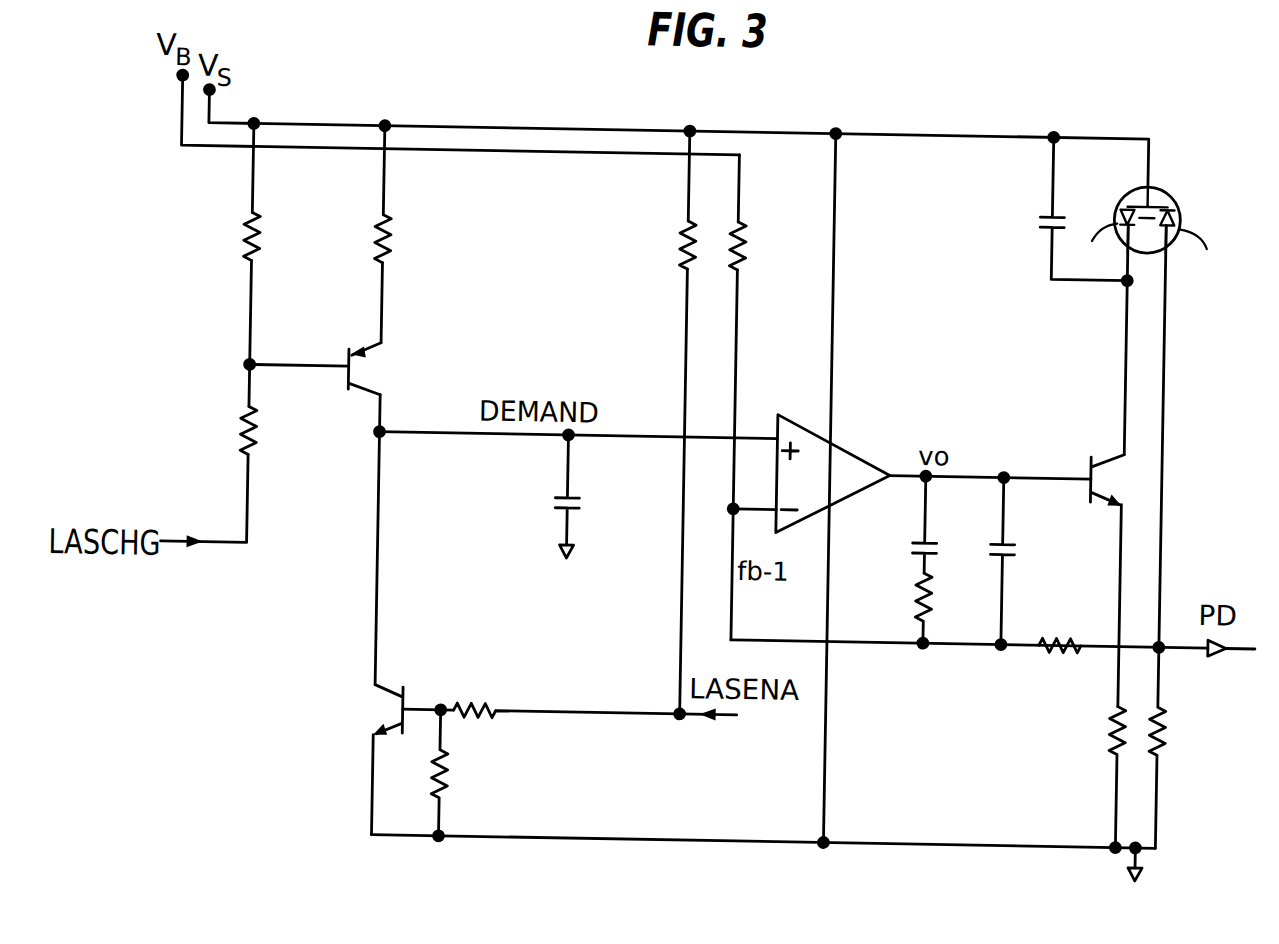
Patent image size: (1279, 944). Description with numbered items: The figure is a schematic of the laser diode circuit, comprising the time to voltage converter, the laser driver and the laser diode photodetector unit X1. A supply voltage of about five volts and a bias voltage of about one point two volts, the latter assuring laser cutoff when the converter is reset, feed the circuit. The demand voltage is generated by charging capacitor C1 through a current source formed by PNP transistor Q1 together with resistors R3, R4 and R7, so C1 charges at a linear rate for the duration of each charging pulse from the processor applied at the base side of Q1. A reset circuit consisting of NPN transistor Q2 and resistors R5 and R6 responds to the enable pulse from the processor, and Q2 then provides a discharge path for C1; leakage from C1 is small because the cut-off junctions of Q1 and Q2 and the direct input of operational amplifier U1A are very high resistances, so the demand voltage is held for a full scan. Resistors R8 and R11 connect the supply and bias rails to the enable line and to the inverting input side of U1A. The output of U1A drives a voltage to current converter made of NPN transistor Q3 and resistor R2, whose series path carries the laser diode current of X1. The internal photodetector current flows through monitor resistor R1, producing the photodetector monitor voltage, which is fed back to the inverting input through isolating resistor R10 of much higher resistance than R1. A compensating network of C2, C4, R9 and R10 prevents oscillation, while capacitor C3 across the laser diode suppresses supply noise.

The resistor R7 is at (273, 236).
The resistor R3 is at (404, 235).
The resistor R4 is at (270, 430).
The resistor R8 is at (663, 422).
The resistor R11 is at (766, 398).
The resistor R9 is at (903, 607).
The isolating resistor R10 is at (1064, 625).
The resistor R2 is at (1092, 777).
The monitor resistor R1 is at (1181, 537).
The resistor R5 is at (461, 773).
The resistor R6 is at (596, 693).
The capacitor C1 is at (548, 496).
The capacitor C2 is at (903, 524).
The capacitor C3 is at (1061, 208).
The capacitor C4 is at (1022, 561).
The PNP transistor Q1 is at (383, 368).
The NPN transistor Q2 is at (365, 709).
The NPN transistor Q3 is at (1083, 470).
The operational amplifier U1A is at (836, 488).
The laser diode photodetector unit X1 is at (1151, 217).